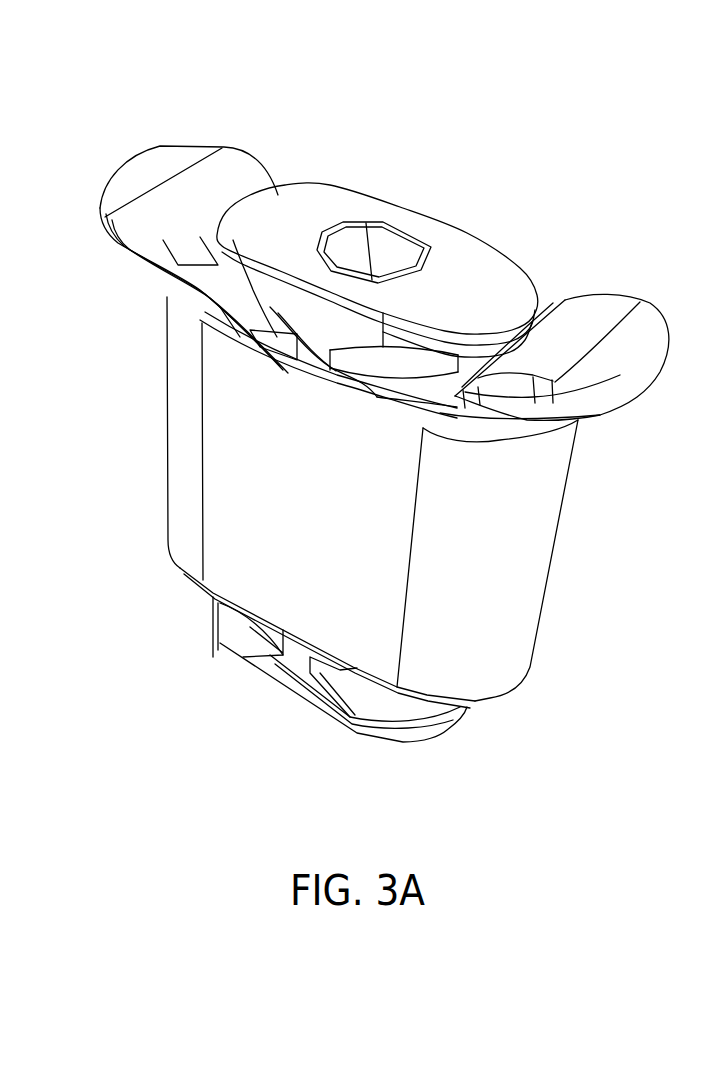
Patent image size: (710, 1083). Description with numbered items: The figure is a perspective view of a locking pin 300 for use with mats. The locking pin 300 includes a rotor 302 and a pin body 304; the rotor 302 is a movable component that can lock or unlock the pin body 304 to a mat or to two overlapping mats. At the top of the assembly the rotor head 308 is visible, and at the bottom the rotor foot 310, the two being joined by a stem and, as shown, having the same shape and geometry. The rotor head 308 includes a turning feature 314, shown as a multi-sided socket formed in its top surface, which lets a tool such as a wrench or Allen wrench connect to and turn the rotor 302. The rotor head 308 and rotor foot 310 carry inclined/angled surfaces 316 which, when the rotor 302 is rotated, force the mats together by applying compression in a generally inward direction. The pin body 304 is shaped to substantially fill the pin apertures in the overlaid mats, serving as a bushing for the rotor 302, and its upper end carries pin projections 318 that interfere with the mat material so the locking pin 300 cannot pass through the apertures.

The locking pin 300 is at (504, 96).
The rotor 302 is at (480, 263).
The pin body 304 is at (510, 565).
The rotor head 308 is at (410, 213).
The rotor foot 310 is at (297, 685).
The turning feature 314 is at (361, 242).
The inclined/angled surfaces 316 is at (242, 631).
The pin projections 318 is at (162, 166).